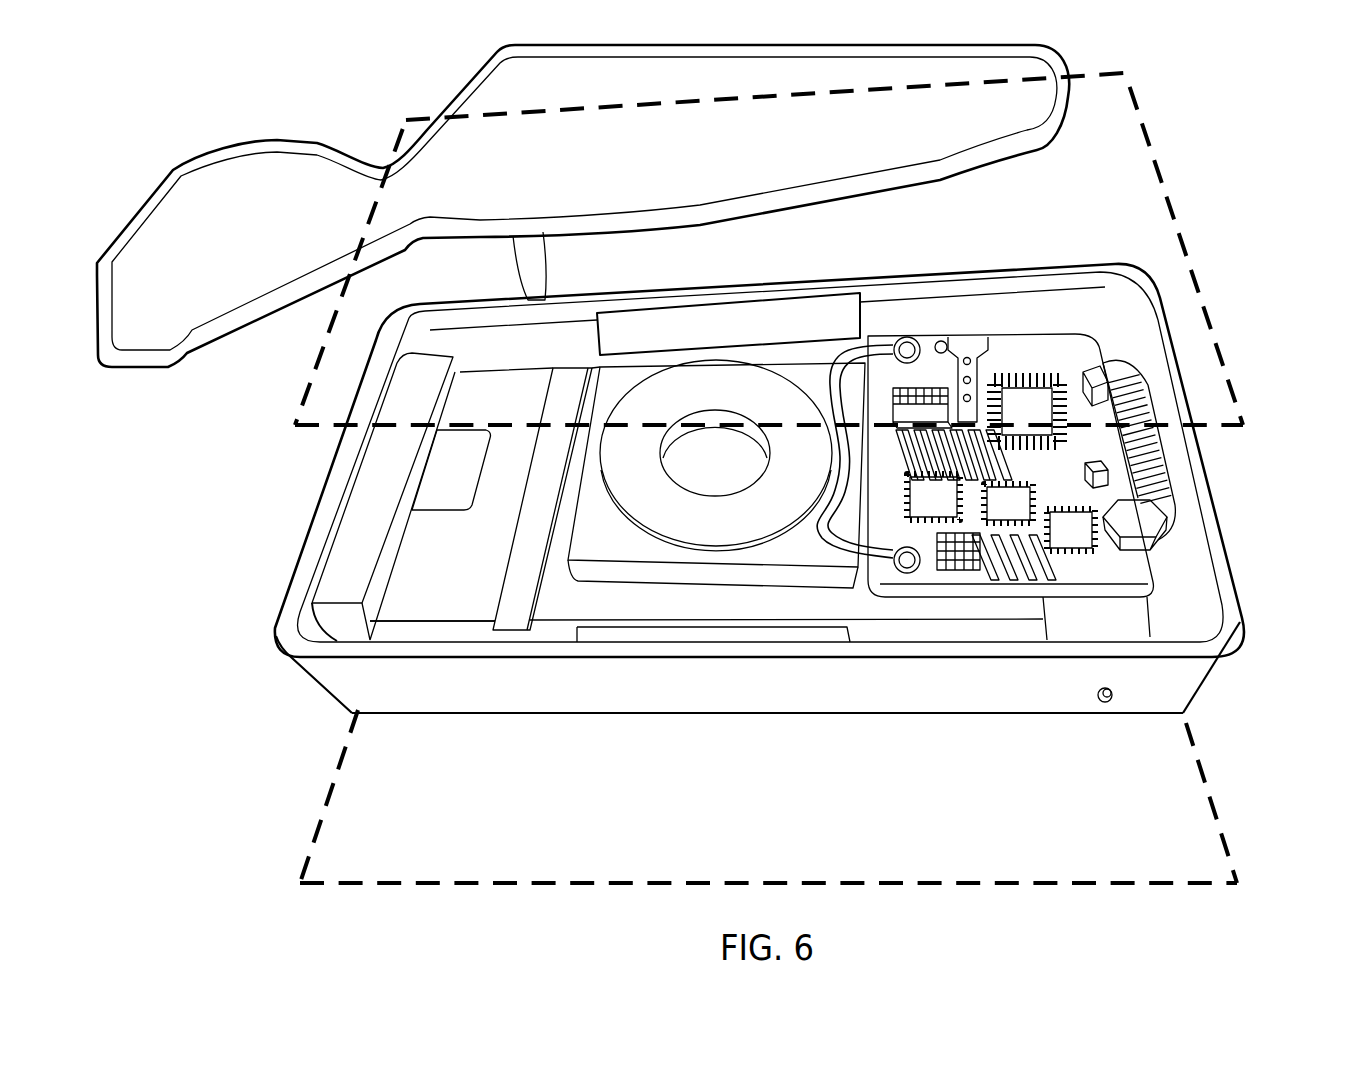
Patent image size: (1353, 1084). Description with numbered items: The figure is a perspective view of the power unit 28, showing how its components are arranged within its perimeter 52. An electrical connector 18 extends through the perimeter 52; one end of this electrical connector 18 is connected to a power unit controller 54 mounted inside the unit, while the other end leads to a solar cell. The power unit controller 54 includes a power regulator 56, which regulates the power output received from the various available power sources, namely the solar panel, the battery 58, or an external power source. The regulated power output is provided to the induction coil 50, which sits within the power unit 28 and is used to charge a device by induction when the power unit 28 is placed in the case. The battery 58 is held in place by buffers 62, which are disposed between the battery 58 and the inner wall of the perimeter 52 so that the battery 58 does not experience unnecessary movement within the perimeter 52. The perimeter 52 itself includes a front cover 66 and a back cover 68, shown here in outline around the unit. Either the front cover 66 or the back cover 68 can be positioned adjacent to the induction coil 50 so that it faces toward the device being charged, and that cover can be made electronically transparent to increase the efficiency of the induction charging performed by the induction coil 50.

The electrical connector 18 is at (547, 280).
The power unit 28 is at (182, 517).
The induction coil 50 is at (673, 523).
The perimeter 52 is at (980, 697).
The power unit controller 54 is at (1097, 380).
The power regulator 56 is at (1137, 523).
The battery 58 is at (420, 587).
The buffers 62 is at (360, 533).
The front cover 66 is at (1157, 167).
The back cover 68 is at (1213, 812).